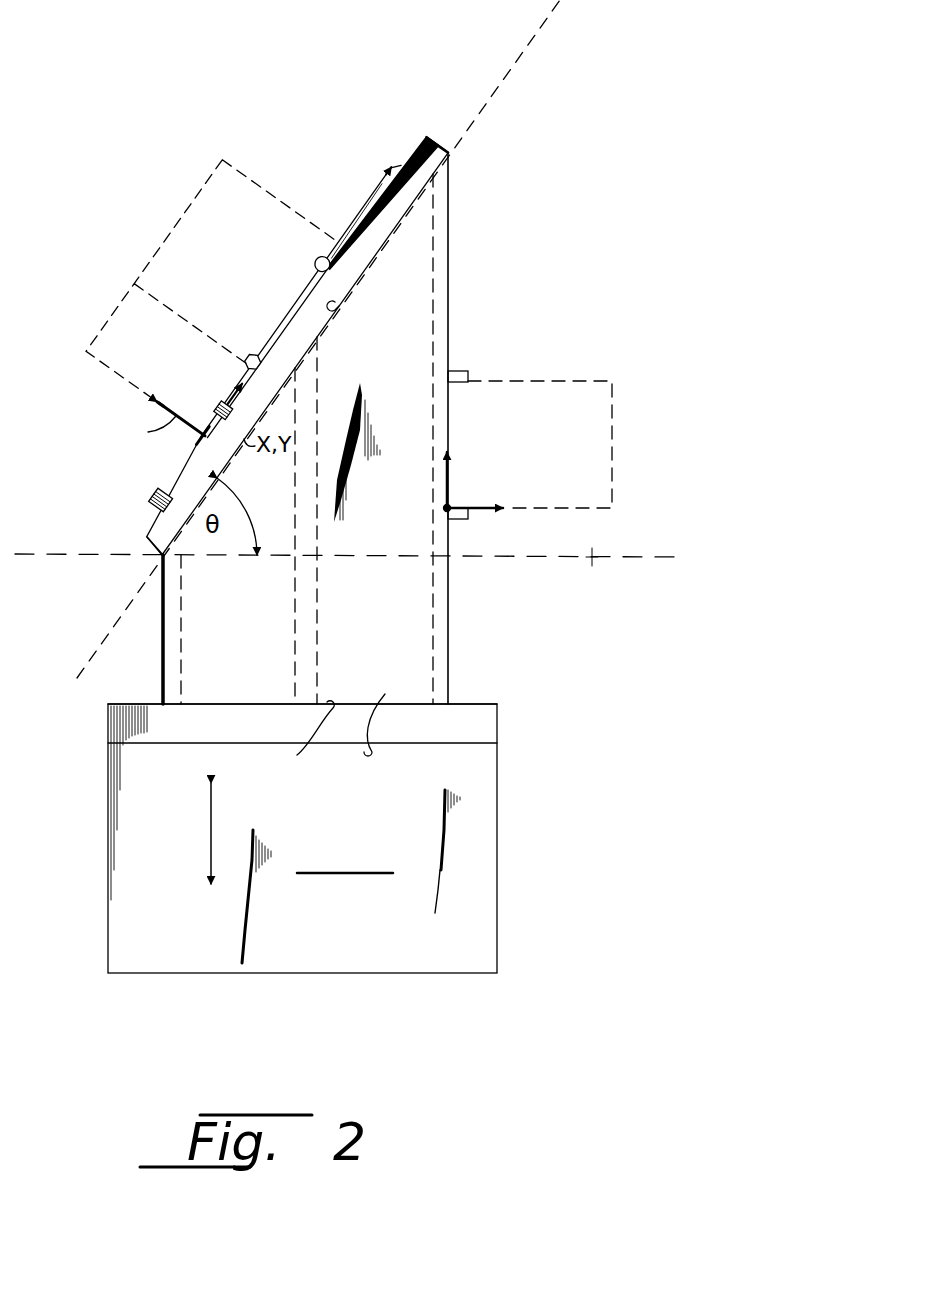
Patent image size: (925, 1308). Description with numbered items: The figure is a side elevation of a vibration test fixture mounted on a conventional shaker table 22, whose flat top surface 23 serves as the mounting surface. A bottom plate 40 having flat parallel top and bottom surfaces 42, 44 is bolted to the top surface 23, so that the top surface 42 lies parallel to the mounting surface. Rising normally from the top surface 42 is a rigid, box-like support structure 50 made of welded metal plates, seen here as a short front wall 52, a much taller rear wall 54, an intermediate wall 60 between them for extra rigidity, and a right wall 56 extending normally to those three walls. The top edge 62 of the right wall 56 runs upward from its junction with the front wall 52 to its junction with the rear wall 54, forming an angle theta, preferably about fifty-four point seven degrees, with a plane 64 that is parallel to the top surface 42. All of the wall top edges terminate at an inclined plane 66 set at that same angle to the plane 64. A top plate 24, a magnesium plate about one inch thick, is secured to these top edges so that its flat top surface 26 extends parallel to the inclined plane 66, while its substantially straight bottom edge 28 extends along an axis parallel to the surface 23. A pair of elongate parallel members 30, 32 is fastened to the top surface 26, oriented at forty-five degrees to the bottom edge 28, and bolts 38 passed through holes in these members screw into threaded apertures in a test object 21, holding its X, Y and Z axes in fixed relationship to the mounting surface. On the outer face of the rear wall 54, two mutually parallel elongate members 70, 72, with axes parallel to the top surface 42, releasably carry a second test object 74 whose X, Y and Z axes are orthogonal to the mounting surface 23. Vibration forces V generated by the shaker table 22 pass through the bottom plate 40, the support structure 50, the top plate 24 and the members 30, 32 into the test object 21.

The test object 21 is at (176, 224).
The shaker table 22 is at (478, 840).
The top surface of shaker table 23 is at (455, 744).
The top plate 24 is at (452, 157).
The top surface of top plate 26 is at (428, 147).
The bottom edge of top plate 28 is at (160, 554).
The elongate parallel member 30 is at (160, 492).
The elongate parallel member 32 is at (383, 187).
The bolts 38 is at (317, 258).
The bottom plate 40 is at (460, 712).
The top surface of bottom plate 42 is at (298, 736).
The bottom surface of bottom plate 44 is at (372, 710).
The support structure 50 is at (452, 275).
The front wall 52 is at (175, 670).
The rear wall 54 is at (440, 617).
The right wall 56 is at (415, 258).
The intermediate wall 60 is at (317, 647).
The top edge of right wall 62 is at (339, 309).
The plane 64 is at (617, 556).
The inclined plane 66 is at (535, 40).
The elongate member 70 is at (458, 371).
The elongate member 72 is at (460, 520).
The test object 74 is at (590, 375).